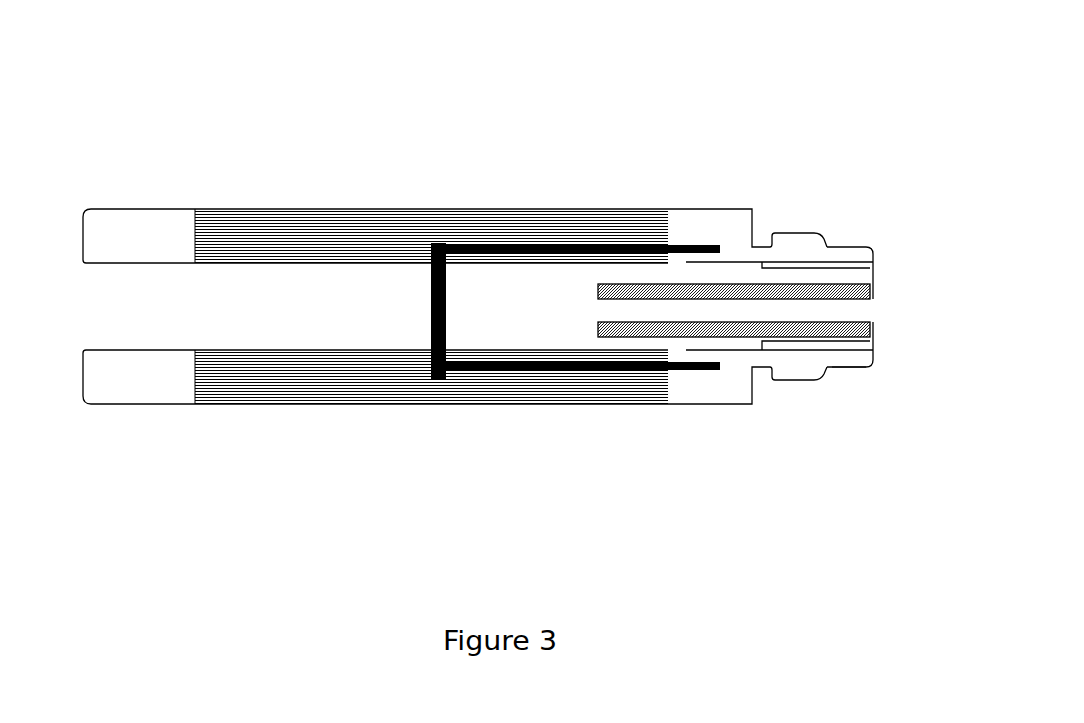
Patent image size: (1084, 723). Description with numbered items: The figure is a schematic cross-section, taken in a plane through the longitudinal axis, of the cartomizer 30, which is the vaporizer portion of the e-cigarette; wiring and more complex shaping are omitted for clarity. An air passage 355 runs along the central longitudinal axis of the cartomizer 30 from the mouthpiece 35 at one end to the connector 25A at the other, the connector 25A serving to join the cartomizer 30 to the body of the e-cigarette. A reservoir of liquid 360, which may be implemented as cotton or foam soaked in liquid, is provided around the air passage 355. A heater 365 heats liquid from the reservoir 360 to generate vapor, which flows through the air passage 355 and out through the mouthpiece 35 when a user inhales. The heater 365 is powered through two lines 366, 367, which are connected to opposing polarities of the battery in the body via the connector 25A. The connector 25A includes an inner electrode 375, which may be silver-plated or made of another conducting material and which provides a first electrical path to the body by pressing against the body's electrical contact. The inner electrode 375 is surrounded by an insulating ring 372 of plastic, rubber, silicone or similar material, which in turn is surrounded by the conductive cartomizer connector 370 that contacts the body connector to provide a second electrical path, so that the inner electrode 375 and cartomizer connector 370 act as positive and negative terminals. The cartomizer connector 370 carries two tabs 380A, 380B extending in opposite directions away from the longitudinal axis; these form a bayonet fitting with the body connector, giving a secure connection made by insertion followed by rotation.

The connector 25A is at (845, 387).
The cartomizer 30 is at (282, 432).
The mouthpiece 35 is at (127, 433).
The air passage 355 is at (257, 306).
The reservoir of liquid 360 is at (315, 228).
The heater 365 is at (432, 280).
The power line 366 is at (583, 245).
The power line 367 is at (542, 368).
The cartomizer connector 370 is at (835, 255).
The insulating ring 372 is at (853, 270).
The inner electrode 375 is at (825, 330).
The tab 380A is at (795, 243).
The tab 380B is at (797, 370).